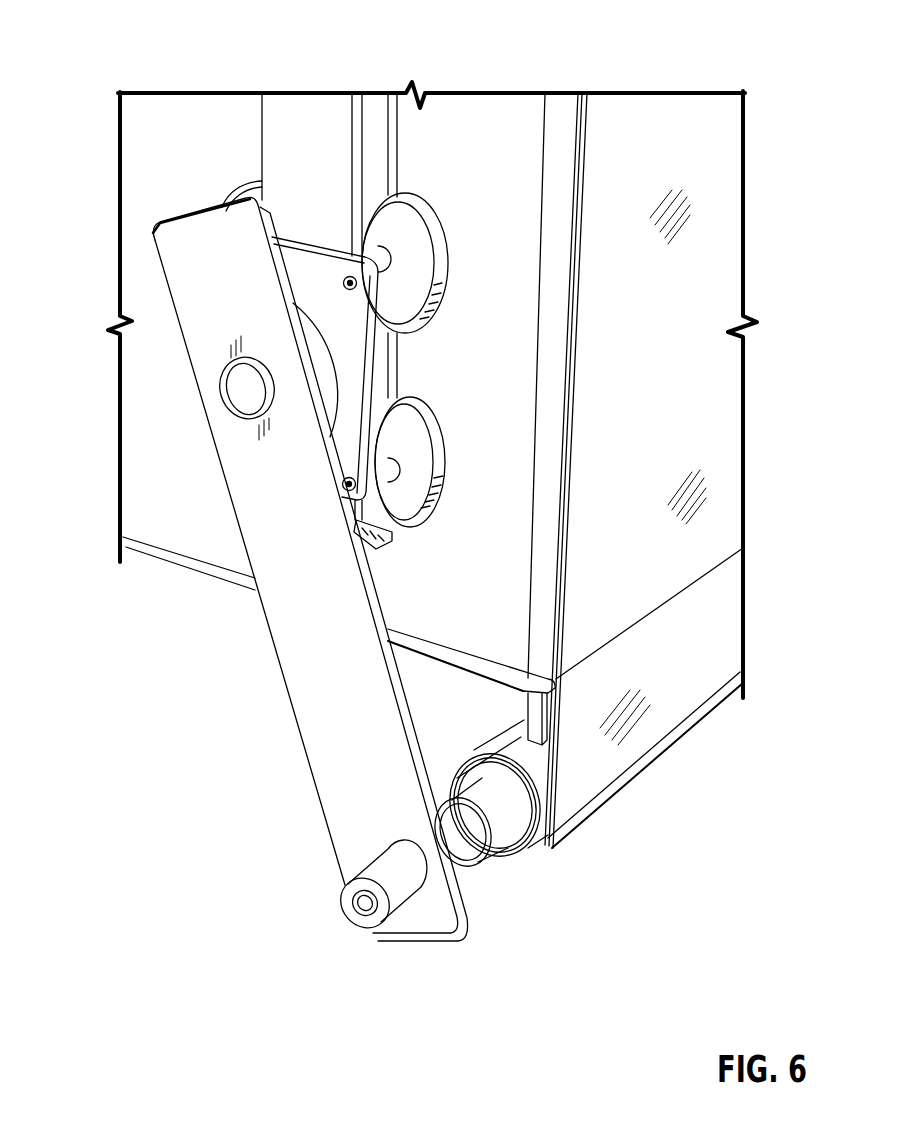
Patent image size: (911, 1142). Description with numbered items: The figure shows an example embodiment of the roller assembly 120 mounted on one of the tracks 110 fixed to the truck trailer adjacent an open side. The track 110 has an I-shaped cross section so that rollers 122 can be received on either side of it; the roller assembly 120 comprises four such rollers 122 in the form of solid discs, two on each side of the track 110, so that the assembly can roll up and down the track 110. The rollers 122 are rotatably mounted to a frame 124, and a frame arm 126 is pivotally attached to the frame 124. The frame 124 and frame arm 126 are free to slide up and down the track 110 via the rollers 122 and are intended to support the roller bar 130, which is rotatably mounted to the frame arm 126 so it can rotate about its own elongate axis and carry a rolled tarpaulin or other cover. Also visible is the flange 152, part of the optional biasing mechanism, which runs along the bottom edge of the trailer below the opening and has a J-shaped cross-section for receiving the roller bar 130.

The track 110 is at (330, 162).
The roller assembly 120 is at (429, 536).
The rollers 122 is at (413, 427).
The frame 124 is at (312, 296).
The frame arm 126 is at (342, 708).
The roller bar 130 is at (508, 822).
The flange 152 is at (538, 712).